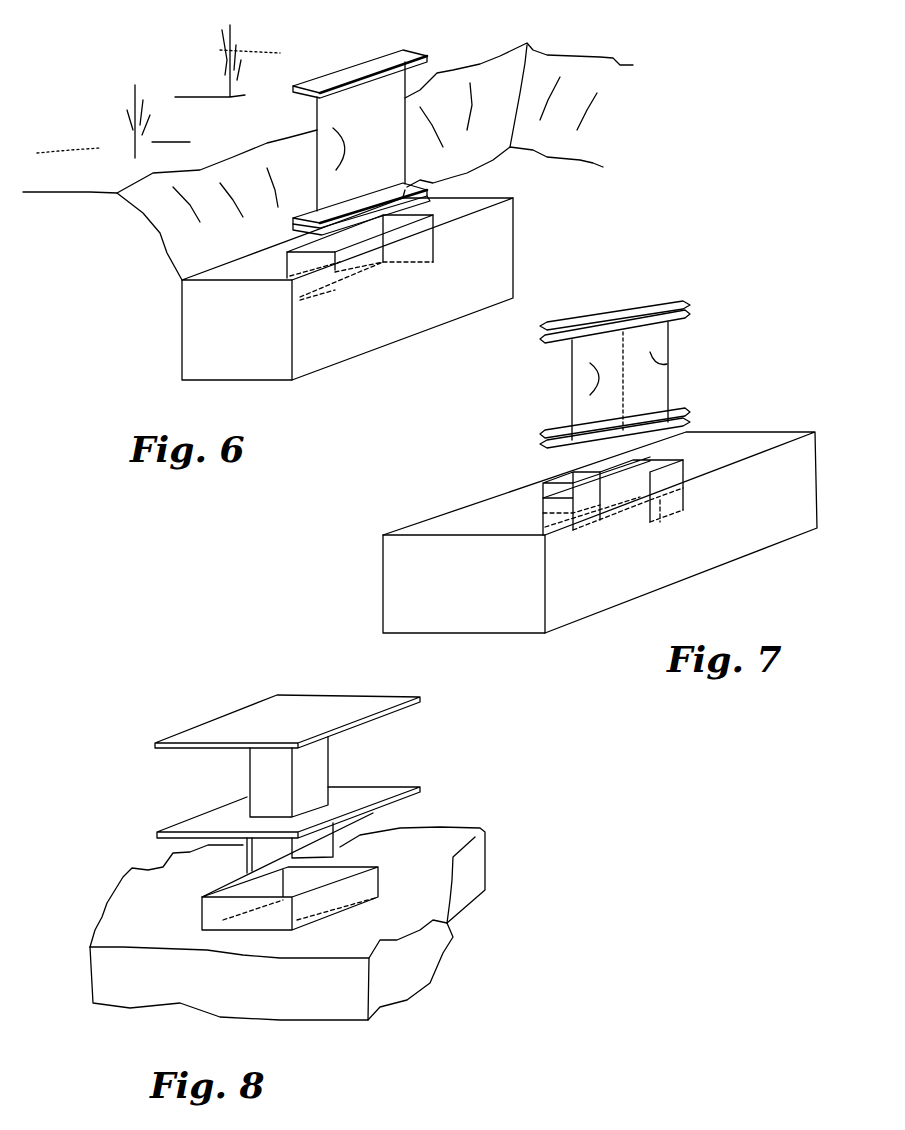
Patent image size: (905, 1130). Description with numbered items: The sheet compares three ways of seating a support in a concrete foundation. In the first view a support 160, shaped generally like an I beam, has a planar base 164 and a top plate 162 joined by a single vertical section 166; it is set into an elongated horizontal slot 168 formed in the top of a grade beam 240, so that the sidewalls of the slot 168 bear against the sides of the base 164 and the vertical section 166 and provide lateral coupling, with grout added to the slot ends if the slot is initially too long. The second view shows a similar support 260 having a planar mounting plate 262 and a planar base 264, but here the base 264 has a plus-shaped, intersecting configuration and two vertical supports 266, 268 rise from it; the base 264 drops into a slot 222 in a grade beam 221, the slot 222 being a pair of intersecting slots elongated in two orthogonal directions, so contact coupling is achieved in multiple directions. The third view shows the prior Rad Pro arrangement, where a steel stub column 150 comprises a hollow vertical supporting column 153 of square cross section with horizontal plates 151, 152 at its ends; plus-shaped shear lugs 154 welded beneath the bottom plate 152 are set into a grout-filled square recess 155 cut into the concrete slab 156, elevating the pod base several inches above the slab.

In FIG. 6, the support 160 is at (380, 129).
In FIG. 6, the top plate 162 is at (342, 72).
In FIG. 6, the planar base 164 is at (430, 182).
In FIG. 6, the vertical section 166 is at (317, 141).
In FIG. 6, the elongated horizontal slot 168 is at (352, 270).
In FIG. 6, the grade beam 240 is at (383, 293).
In FIG. 7, the support 260 is at (653, 348).
In FIG. 7, the planar mounting plate 262 is at (633, 305).
In FIG. 7, the planar base 264 is at (670, 408).
In FIG. 7, the vertical support 266 is at (572, 386).
In FIG. 7, the vertical support 268 is at (668, 361).
In FIG. 7, the grade beam 221 is at (600, 532).
In FIG. 7, the slot 222 is at (650, 458).
In FIG. 8, the stub column 150 is at (333, 764).
In FIG. 8, the horizontal plate 151 is at (229, 722).
In FIG. 8, the horizontal plate 152 is at (200, 815).
In FIG. 8, the vertical supporting column 153 is at (318, 775).
In FIG. 8, the shear lugs 154 is at (337, 837).
In FIG. 8, the recess 155 is at (233, 893).
In FIG. 8, the concrete slab 156 is at (314, 916).